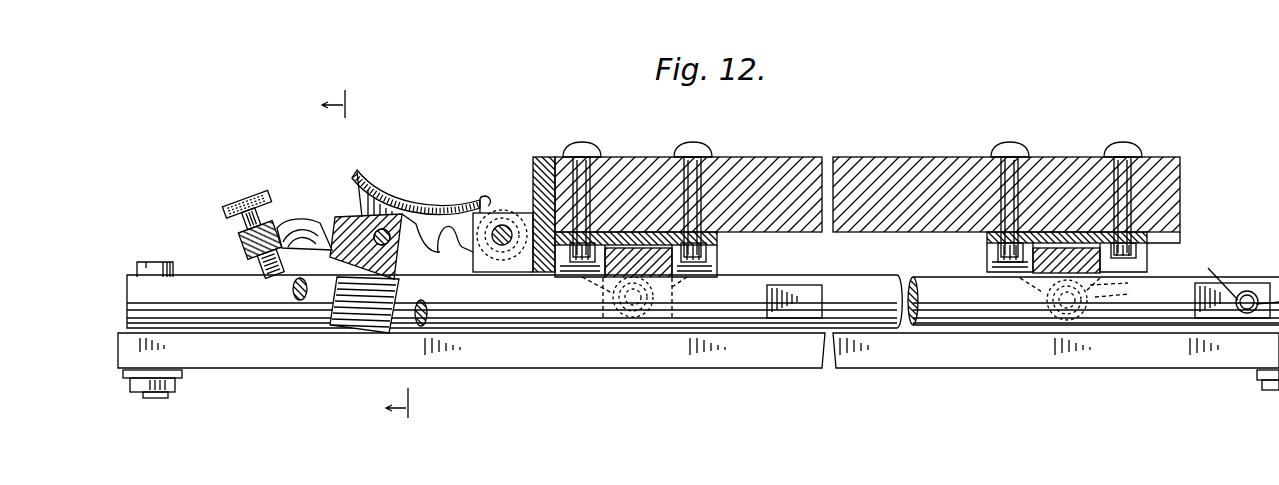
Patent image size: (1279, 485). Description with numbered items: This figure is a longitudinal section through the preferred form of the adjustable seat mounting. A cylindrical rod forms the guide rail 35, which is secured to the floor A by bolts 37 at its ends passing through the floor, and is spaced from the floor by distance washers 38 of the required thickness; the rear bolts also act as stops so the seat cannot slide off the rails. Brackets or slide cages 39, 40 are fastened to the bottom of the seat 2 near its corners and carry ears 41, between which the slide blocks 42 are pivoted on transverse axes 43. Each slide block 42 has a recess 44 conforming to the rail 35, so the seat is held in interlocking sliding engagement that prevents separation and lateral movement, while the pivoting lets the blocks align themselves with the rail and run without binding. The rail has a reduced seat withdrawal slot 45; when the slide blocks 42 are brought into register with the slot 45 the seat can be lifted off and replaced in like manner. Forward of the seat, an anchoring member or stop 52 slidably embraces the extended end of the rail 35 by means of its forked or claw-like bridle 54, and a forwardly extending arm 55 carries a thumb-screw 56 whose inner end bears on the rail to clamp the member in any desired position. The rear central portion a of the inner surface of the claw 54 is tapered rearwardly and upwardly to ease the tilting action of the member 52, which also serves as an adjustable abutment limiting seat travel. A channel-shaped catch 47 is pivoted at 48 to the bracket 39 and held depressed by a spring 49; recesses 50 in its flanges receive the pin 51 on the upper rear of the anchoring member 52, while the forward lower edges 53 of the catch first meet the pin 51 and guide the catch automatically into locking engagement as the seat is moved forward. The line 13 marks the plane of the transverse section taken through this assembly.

The seat 2 is at (877, 165).
The section line 13 is at (351, 254).
The guide rail 35 is at (866, 282).
The bolt 37 is at (172, 242).
The distance washer 38 is at (125, 332).
The bracket or slide cage 39 is at (552, 158).
The bracket or slide cage 40 is at (1150, 242).
The ear 41 is at (703, 262).
The slide block 42 is at (717, 272).
The transverse axis 43 is at (1124, 293).
The recess 44 is at (620, 277).
The seat withdrawal slot 45 is at (816, 288).
The catch 47 is at (433, 205).
The pivot 48 is at (502, 227).
The spring 49 is at (540, 176).
The recess 50 is at (453, 237).
The pin 51 is at (352, 216).
The anchoring member or stop 52 is at (301, 209).
The lower edge 53 is at (421, 242).
The forked or claw-like portion 54 is at (332, 265).
The forwardly extending arm 55 is at (240, 242).
The thumb-screw 56 is at (258, 192).
The floor A is at (768, 356).
The rear central portion a is at (444, 355).